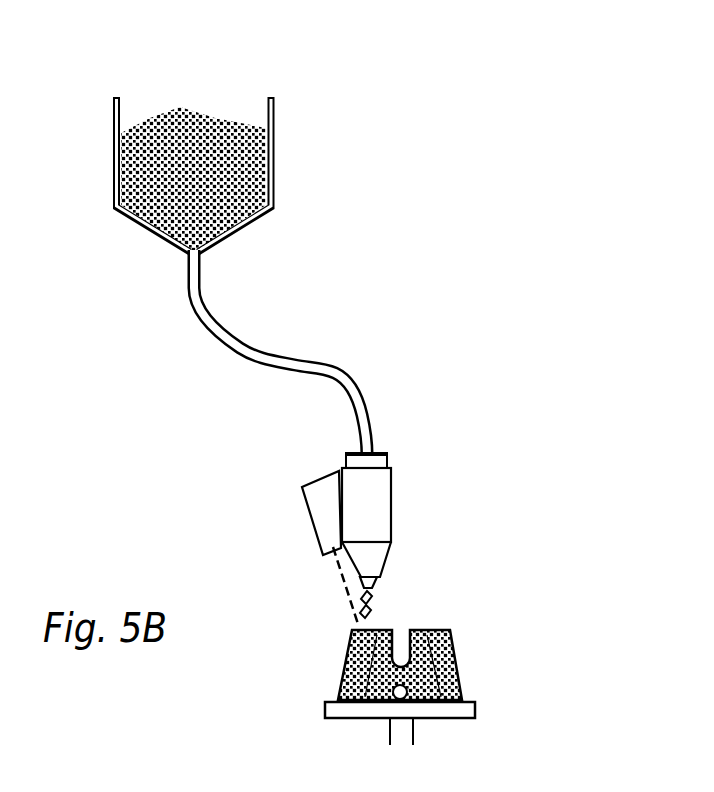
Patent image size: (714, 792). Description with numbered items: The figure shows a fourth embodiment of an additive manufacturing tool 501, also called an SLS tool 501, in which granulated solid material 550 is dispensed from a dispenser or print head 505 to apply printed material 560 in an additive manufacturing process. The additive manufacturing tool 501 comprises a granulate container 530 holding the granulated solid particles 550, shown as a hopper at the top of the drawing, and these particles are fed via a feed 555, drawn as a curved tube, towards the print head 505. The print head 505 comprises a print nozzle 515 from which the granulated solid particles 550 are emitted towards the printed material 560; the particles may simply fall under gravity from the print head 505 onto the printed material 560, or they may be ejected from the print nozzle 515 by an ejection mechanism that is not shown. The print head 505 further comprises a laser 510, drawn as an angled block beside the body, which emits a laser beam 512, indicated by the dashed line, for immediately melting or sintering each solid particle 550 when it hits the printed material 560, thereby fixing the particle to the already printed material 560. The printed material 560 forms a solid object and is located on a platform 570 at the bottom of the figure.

The additive manufacturing tool 501 is at (472, 219).
The granulate container 530 is at (276, 157).
The granulated solid material 550 is at (198, 125).
The feed 555 is at (343, 378).
The print head 505 is at (383, 497).
The laser 510 is at (320, 505).
The print nozzle 515 is at (379, 583).
The laser beam 512 is at (344, 586).
The printed material 560 is at (440, 650).
The platform 570 is at (467, 712).